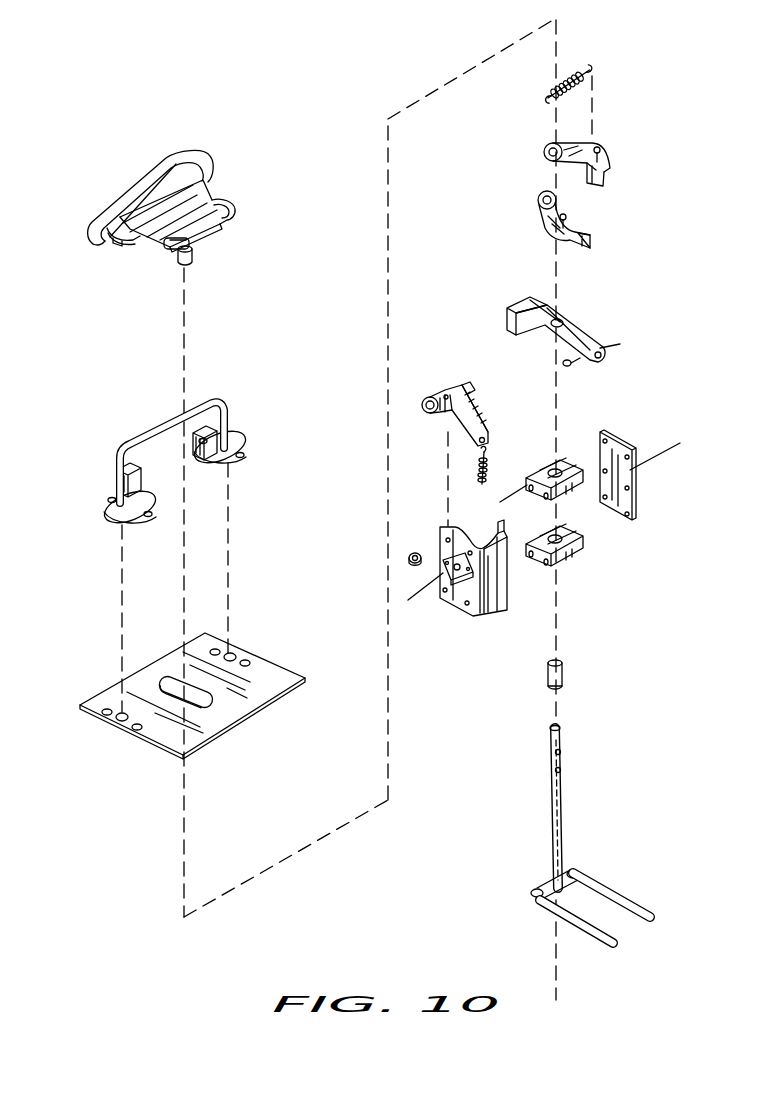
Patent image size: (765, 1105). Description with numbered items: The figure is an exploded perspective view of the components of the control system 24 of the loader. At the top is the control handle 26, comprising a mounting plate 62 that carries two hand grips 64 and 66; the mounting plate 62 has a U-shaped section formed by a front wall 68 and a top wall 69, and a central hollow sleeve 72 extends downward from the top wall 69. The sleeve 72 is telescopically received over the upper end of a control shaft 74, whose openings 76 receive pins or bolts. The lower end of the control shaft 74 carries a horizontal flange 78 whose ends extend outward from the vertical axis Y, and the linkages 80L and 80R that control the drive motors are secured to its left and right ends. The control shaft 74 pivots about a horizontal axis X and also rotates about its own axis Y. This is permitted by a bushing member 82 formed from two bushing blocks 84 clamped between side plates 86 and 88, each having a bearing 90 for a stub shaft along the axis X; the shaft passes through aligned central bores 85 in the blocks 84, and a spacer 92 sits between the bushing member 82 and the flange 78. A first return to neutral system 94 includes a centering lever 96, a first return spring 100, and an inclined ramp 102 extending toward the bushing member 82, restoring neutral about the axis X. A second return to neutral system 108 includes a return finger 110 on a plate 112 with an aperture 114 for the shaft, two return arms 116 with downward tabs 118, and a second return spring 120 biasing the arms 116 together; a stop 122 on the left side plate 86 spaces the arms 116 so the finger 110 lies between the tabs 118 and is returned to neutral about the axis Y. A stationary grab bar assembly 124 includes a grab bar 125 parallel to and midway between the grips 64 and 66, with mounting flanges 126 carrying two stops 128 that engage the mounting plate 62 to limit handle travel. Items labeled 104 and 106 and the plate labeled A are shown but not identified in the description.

The control system 24 is at (182, 990).
The control handle 26 is at (190, 144).
The mounting plate 62 is at (213, 192).
The hand grip 64 is at (228, 222).
The hand grip 66 is at (128, 178).
The front wall 68 is at (167, 255).
The top wall 69 is at (137, 233).
The hollow sleeve 72 is at (192, 262).
The control shaft 74 is at (566, 800).
The openings 76 is at (560, 770).
The flange 78 is at (540, 890).
The linkage 80L is at (612, 886).
The linkage 80R is at (595, 942).
The bushing member 82 is at (428, 520).
The bushing blocks 84 is at (560, 458).
The central bores 85 is at (530, 486).
The left side plate 86 is at (486, 624).
The side plate 88 is at (635, 496).
The bearing 90 is at (452, 590).
The spacer 92 is at (566, 668).
The first return to neutral system 94 is at (437, 322).
The centering lever 96 is at (448, 430).
The first return spring 100 is at (490, 456).
The inclined ramp 102 is at (478, 402).
The nut 104 is at (405, 558).
The tab 106 is at (465, 390).
The second return to neutral system 108 is at (628, 166).
The return finger 110 is at (600, 348).
The plate 112 is at (530, 302).
The aperture 114 is at (565, 322).
The return arms 116 is at (545, 150).
The tab 118 is at (595, 238).
The second return spring 120 is at (590, 70).
The stop 122 is at (481, 605).
The grab bar assembly 124 is at (150, 426).
The grab bar 125 is at (225, 400).
The mounting flanges 126 is at (250, 440).
The stops 128 is at (213, 442).
The plate A is at (135, 690).
The horizontal pivot axis X is at (660, 472).
The vertical axis Y is at (555, 962).